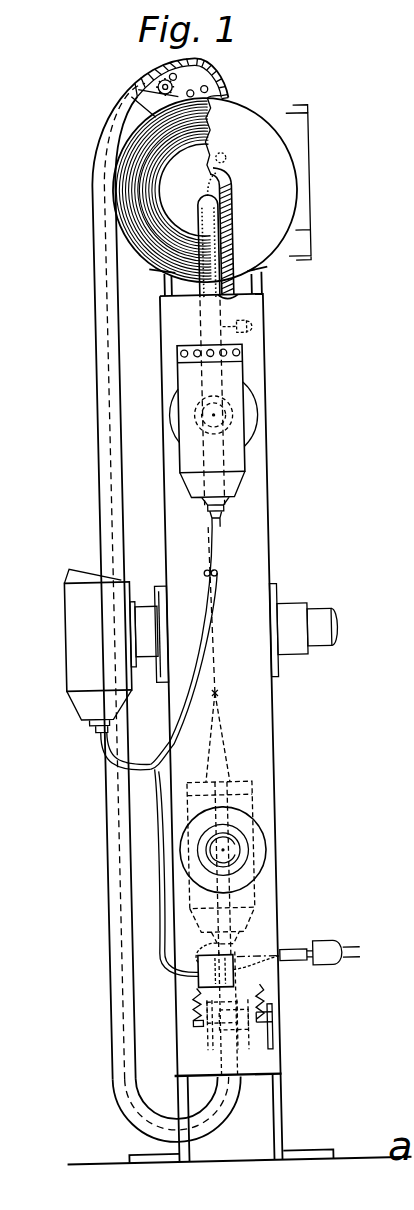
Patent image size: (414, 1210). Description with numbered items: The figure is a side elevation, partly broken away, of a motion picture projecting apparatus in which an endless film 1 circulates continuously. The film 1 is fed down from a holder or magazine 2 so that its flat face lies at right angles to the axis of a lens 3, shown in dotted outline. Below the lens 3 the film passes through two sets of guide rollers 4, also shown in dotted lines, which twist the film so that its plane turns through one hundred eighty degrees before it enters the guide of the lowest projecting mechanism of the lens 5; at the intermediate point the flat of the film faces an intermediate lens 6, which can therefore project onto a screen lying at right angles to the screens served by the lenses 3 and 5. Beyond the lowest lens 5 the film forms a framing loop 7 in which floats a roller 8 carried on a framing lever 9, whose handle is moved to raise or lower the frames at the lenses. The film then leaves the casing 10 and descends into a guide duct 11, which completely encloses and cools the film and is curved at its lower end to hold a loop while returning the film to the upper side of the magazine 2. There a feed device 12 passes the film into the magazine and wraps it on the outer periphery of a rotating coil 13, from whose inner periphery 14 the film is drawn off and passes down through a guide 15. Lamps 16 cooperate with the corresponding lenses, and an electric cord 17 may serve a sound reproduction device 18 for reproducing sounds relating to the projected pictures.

The endless film 1 is at (211, 264).
The magazine 2 is at (247, 115).
The lens 3 is at (226, 416).
The guide rollers 4 is at (280, 694).
The lens 5 is at (222, 853).
The intermediate lens 6 is at (328, 633).
The framing loop 7 is at (222, 1002).
The framing roller 8 is at (246, 1043).
The framing lever 9 is at (257, 1018).
The casing 10 is at (268, 1075).
The guide duct 11 is at (122, 1128).
The feed device 12 is at (160, 78).
The coil 13 is at (216, 102).
The inner periphery 14 is at (166, 163).
The guide 15 is at (236, 210).
The lamps 16 is at (243, 372).
The electric cord 17 is at (155, 735).
The sound reproduction device 18 is at (183, 978).